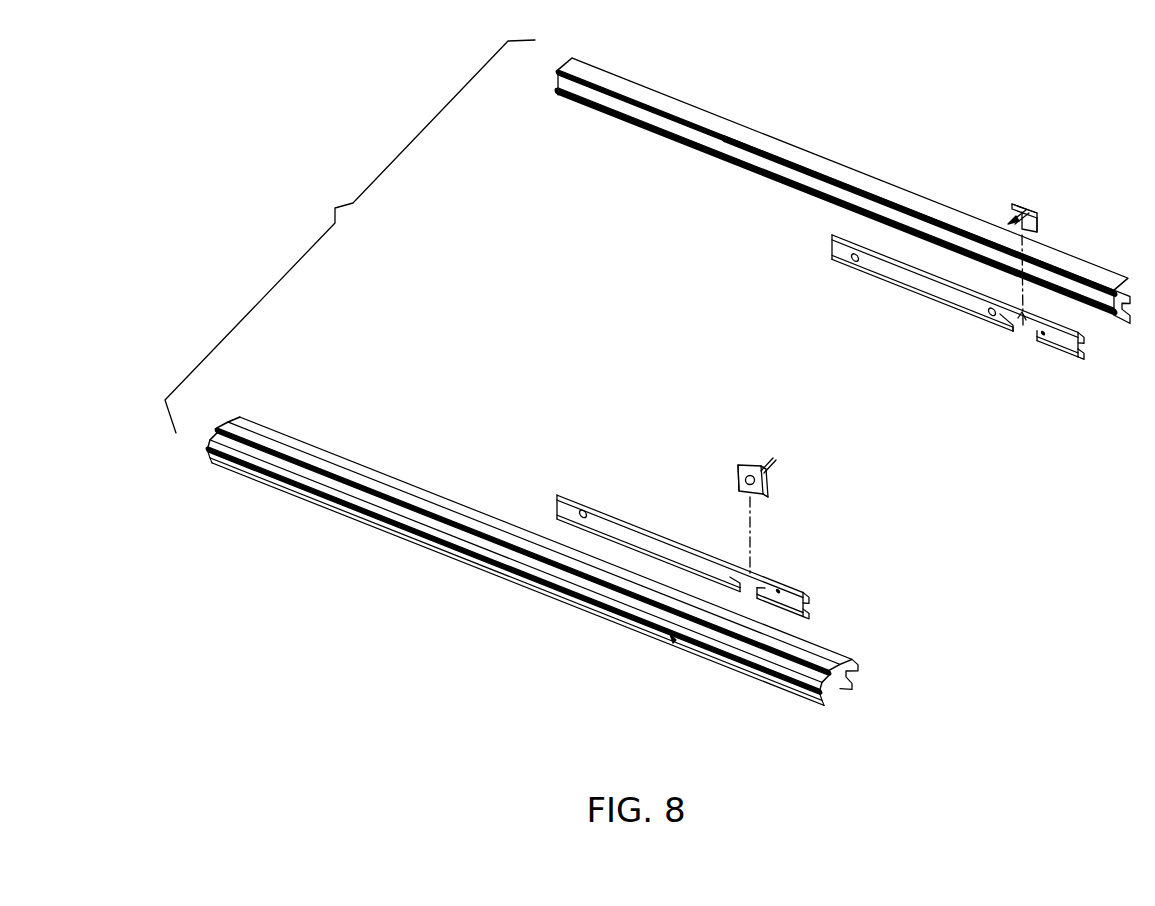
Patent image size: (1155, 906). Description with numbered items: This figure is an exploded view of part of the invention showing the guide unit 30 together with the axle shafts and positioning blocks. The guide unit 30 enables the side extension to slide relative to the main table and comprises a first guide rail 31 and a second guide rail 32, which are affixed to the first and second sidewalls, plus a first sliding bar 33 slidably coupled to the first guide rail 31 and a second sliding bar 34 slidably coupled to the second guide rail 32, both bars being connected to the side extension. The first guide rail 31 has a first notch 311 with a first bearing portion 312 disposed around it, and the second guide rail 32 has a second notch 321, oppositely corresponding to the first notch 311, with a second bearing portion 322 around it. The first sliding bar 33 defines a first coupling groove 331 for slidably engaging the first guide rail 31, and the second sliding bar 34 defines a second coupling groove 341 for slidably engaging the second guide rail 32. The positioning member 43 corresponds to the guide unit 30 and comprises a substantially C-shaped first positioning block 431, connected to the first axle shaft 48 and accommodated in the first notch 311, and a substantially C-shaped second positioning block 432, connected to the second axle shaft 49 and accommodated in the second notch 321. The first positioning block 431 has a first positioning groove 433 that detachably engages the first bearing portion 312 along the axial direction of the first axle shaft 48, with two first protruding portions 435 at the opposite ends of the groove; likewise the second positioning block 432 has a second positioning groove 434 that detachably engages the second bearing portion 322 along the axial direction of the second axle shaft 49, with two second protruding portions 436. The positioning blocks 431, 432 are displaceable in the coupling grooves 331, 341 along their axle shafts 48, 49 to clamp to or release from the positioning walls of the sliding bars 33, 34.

The guide unit 30 is at (673, 640).
The first guide rail 31 is at (800, 598).
The first notch 311 is at (758, 575).
The first bearing portion 312 is at (742, 566).
The second guide rail 32 is at (1062, 348).
The second notch 321 is at (1024, 322).
The second bearing portion 322 is at (1013, 315).
The first sliding bar 33 is at (786, 680).
The first coupling groove 331 is at (843, 670).
The second sliding bar 34 is at (1095, 270).
The second coupling groove 341 is at (1123, 305).
The positioning member 43 is at (766, 484).
The first positioning block 431 is at (742, 466).
The second positioning block 432 is at (1020, 205).
The first positioning groove 433 is at (768, 477).
The second positioning groove 434 is at (1040, 229).
The first protruding portions 435 is at (765, 477).
The second protruding portions 436 is at (1023, 205).
The first axle shaft 48 is at (762, 458).
The second axle shaft 49 is at (1006, 222).